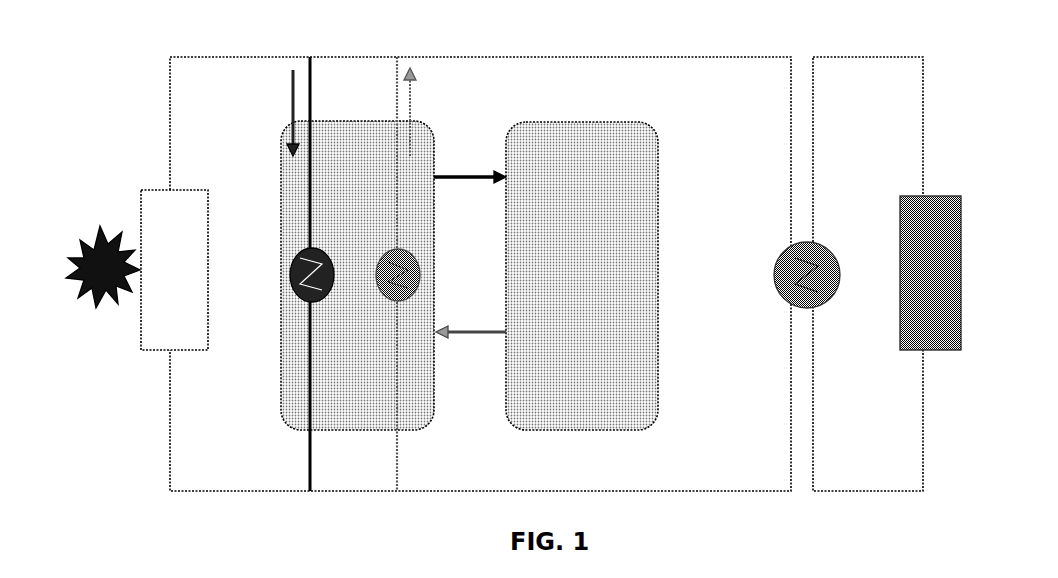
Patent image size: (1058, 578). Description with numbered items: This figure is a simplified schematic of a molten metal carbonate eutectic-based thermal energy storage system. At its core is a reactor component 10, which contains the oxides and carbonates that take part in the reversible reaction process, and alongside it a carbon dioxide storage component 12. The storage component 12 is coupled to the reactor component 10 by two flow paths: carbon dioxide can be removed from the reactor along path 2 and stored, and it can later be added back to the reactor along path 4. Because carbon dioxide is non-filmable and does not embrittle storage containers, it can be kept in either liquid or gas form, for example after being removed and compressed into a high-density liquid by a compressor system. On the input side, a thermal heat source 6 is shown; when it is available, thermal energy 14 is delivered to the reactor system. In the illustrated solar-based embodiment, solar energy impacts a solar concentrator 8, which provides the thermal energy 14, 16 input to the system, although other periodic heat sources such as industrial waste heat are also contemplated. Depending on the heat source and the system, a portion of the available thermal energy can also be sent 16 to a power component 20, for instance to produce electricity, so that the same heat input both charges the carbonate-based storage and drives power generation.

The carbon dioxide removal 2 is at (455, 177).
The carbon dioxide addition 4 is at (452, 331).
The thermal heat source 6 is at (82, 236).
The solar concentrator 8 is at (174, 270).
The reactor component 10 is at (281, 159).
The carbon dioxide storage component 12 is at (658, 145).
The thermal energy 14 is at (290, 113).
The thermal energy sent to power component 16 is at (566, 57).
The power component 20 is at (868, 57).